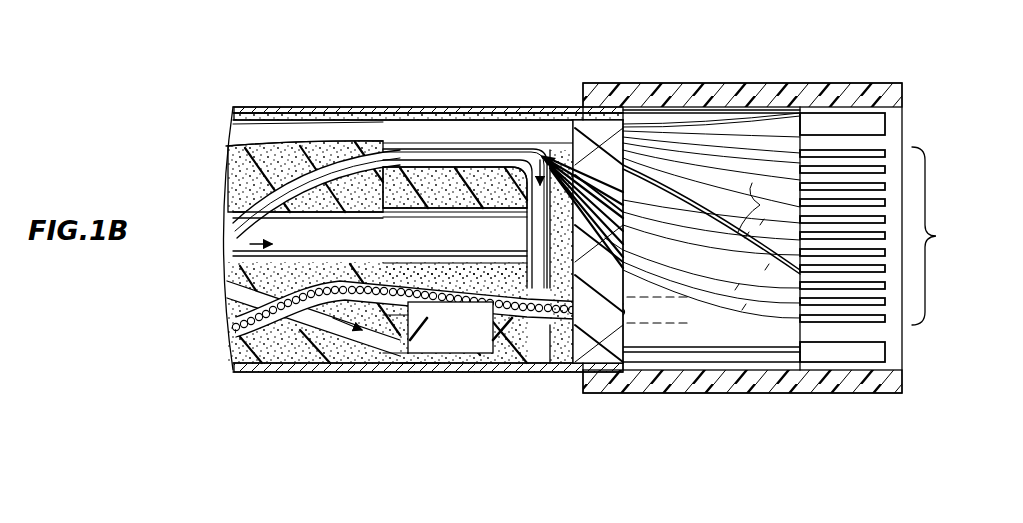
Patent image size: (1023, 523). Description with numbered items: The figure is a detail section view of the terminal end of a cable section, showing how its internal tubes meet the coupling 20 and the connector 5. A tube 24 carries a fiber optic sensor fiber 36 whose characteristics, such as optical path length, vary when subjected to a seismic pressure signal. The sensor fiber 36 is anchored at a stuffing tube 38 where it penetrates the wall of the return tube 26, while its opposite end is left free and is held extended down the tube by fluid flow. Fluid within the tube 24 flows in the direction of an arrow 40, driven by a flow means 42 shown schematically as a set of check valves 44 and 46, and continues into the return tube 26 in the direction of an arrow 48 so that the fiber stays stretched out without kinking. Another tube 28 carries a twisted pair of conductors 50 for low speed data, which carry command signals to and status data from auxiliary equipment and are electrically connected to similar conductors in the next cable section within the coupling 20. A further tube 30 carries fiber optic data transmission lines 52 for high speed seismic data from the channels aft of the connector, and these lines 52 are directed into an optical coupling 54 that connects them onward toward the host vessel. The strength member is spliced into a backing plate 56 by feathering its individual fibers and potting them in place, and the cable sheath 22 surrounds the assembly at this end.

The connector 5 is at (615, 246).
The coupling 20 is at (800, 395).
The optical fiber cable 22 is at (236, 250).
The tube 24 is at (330, 362).
The return tube 26 is at (303, 173).
The tube 28 is at (477, 360).
The tube 30 is at (367, 117).
The fiber optic sensor fiber 36 is at (470, 158).
The stuffing tube 38 is at (546, 155).
The arrow 40 is at (302, 368).
The flow means 42 is at (438, 360).
The check valve 44 is at (420, 370).
The check valve 46 is at (530, 362).
The arrow 48 is at (585, 165).
The twisted pair of conductors 50 is at (591, 362).
The fiber optic data transmission lines 52 is at (733, 137).
The optical coupling 54 is at (943, 236).
The backing plate 56 is at (633, 364).